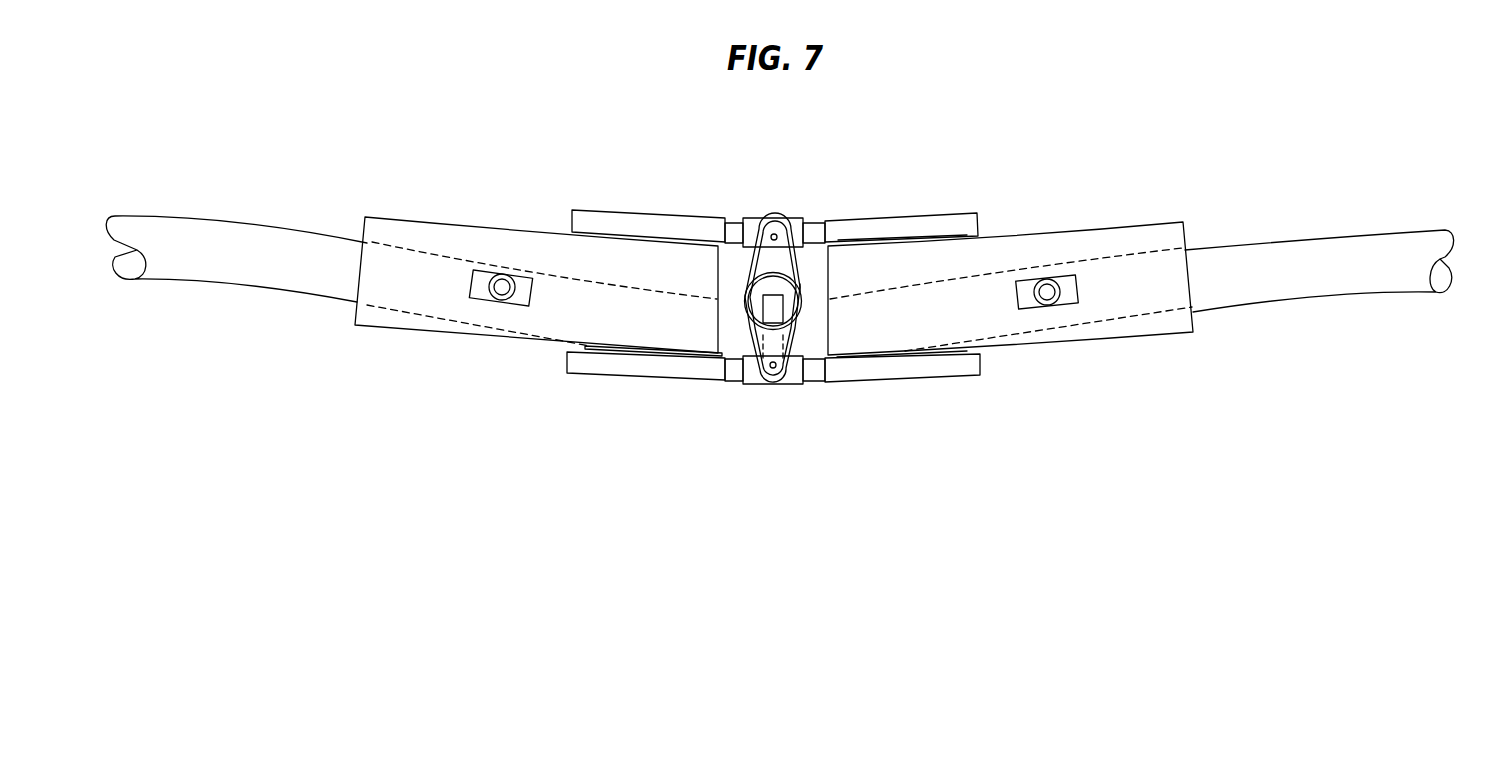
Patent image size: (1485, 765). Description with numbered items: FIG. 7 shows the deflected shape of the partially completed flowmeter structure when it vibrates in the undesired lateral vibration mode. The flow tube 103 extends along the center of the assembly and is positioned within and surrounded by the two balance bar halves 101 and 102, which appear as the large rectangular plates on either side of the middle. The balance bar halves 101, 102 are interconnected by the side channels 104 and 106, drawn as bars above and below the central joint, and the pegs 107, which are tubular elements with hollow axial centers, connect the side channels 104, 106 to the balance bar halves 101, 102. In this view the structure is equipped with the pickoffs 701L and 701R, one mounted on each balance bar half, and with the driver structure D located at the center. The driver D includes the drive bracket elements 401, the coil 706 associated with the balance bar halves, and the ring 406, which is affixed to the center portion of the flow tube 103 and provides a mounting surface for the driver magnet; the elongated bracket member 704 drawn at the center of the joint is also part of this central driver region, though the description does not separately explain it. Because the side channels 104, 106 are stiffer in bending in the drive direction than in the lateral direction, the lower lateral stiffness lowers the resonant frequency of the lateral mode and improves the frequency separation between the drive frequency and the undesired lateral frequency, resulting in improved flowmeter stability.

The balance bar half 101 is at (437, 237).
The balance bar half 102 is at (1150, 338).
The flow tube 103 is at (237, 228).
The side channel 104 is at (603, 367).
The side channel 106 is at (612, 222).
The pegs 107 is at (955, 238).
The drive bracket elements 401 is at (757, 223).
The ring 406 is at (782, 297).
The pickoff 701L is at (495, 273).
The pickoff 701R is at (1048, 278).
The hinge arm 704 is at (793, 232).
The coil 706 is at (755, 294).
The driver D is at (800, 285).